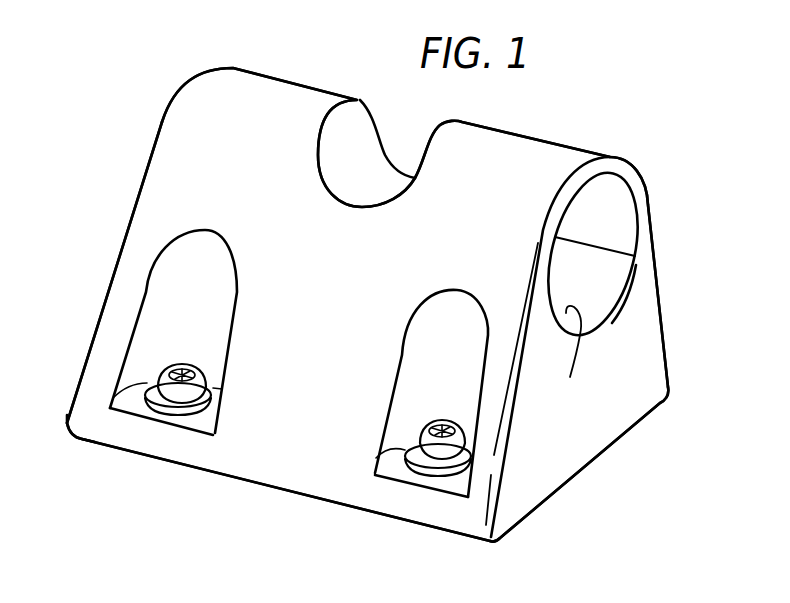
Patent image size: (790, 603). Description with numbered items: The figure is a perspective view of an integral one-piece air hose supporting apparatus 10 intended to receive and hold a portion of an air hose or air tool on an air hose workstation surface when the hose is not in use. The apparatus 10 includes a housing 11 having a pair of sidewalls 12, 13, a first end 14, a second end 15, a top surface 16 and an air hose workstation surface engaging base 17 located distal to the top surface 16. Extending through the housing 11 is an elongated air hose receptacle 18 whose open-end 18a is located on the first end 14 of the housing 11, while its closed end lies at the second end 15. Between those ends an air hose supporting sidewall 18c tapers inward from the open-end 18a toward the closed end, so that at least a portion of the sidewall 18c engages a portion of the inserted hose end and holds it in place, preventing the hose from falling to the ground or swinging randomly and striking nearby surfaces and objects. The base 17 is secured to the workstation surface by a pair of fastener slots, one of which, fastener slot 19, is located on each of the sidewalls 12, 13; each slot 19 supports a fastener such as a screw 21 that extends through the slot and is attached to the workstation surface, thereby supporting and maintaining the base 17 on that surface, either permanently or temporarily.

The air hose supporting apparatus 10 is at (643, 162).
The housing 11 is at (67, 432).
The sidewall 12 is at (265, 442).
The sidewall 13 is at (657, 302).
The first end 14 is at (618, 403).
The second end 15 is at (128, 218).
The top surface 16 is at (258, 92).
The air hose workstation surface engaging base 17 is at (335, 505).
The elongated air hose receptacle 18 is at (615, 238).
The open-end 18a is at (612, 325).
The air hose supporting sidewall 18c is at (566, 361).
The fastener slot 19 is at (167, 417).
The screw 21 is at (423, 443).